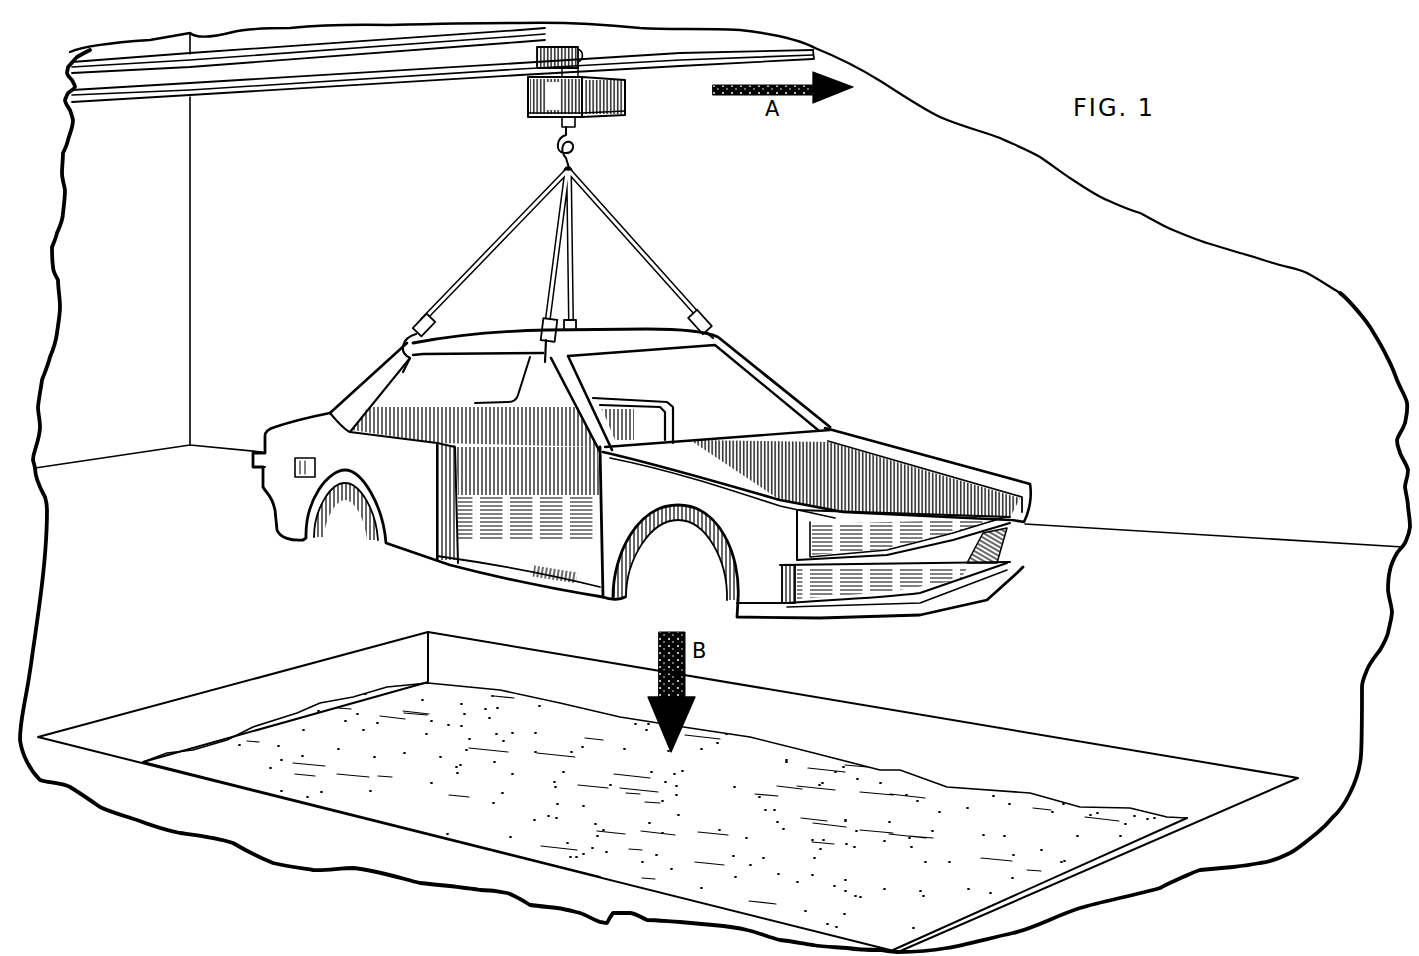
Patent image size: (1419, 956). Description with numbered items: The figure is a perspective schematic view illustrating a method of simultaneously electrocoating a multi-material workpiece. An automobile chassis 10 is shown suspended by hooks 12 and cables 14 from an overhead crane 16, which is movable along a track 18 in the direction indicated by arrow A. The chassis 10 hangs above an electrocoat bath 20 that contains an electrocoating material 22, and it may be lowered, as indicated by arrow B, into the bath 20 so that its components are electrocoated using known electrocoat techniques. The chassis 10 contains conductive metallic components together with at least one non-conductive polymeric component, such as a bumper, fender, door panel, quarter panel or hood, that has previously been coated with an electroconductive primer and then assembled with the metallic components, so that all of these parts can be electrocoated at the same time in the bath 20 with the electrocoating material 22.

The automobile chassis 10 is at (966, 445).
The hooks 12 is at (713, 330).
The cables 14 is at (650, 252).
The overhead crane 16 is at (618, 118).
The track 18 is at (816, 48).
The electrocoat bath 20 is at (1030, 750).
The electrocoating material 22 is at (917, 831).